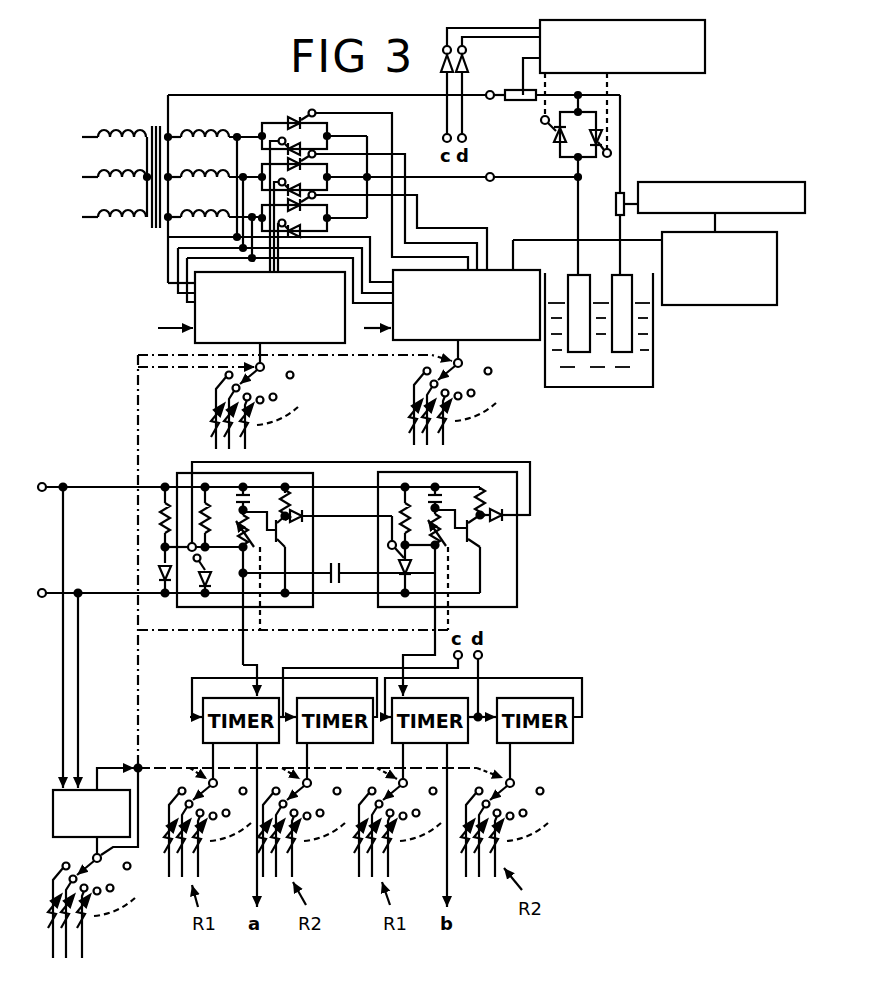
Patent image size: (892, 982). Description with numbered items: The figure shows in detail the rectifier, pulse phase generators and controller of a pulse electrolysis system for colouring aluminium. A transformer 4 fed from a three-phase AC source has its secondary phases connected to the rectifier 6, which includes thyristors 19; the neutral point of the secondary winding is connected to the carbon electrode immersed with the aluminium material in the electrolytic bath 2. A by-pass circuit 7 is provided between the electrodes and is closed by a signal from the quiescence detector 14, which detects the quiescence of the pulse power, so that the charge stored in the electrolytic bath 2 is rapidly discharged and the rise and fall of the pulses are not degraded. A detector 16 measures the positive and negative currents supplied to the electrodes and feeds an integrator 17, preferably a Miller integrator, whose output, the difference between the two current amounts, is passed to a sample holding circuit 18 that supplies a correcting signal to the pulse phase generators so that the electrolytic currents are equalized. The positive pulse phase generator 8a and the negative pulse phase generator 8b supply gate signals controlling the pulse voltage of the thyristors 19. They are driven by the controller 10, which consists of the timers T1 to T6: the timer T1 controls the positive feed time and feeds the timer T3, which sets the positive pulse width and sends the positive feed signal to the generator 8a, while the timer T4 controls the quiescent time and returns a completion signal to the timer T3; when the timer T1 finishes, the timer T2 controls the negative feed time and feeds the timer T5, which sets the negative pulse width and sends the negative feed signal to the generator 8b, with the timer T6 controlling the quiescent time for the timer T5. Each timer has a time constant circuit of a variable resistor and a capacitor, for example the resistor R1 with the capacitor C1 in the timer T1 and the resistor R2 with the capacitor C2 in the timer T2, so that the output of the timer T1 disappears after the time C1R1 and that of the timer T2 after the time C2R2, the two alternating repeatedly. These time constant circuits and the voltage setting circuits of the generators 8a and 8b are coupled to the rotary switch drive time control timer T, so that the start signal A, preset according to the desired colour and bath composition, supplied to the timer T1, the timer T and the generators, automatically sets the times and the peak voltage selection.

The electrolytic bath 2 is at (605, 380).
The transformer 4 is at (158, 127).
The rectifier 6 is at (244, 118).
The by-pass circuit 7 is at (606, 120).
The positive pulse phase generator 8a is at (528, 341).
The negative pulse phase generator 8b is at (194, 312).
The controller 10 is at (536, 487).
The quiescence detector 14 is at (693, 74).
The detector 16 is at (614, 208).
The integrator 17 is at (680, 182).
The sample holding circuit 18 is at (712, 305).
The thyristors 19 is at (290, 117).
The start signal A is at (248, 635).
The capacitor C1 is at (254, 498).
The capacitor C2 is at (445, 498).
The variable resistor R1 is at (234, 528).
The variable resistor R2 is at (444, 537).
The rotary switch drive time control timer T is at (52, 830).
The timer T1 is at (292, 584).
The timer T2 is at (479, 584).
The timer T3 is at (262, 744).
The timer T4 is at (355, 744).
The timer T5 is at (455, 744).
The timer T6 is at (573, 737).